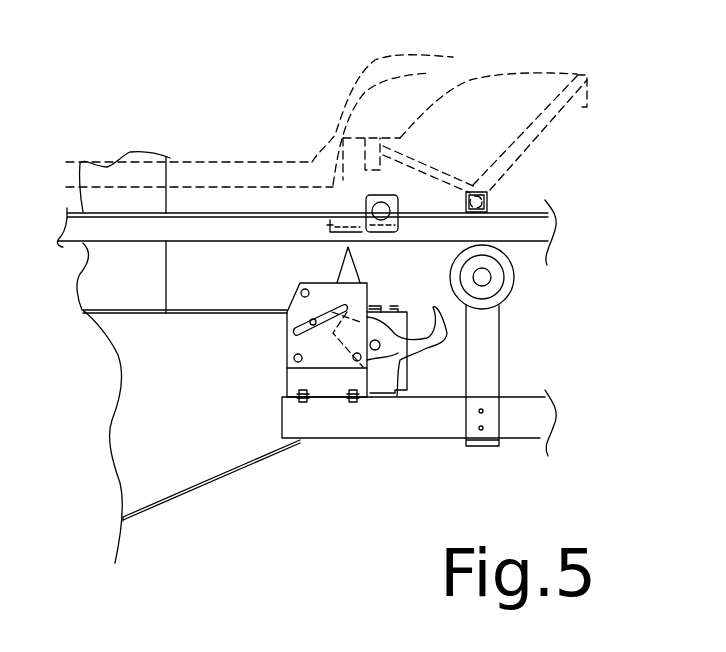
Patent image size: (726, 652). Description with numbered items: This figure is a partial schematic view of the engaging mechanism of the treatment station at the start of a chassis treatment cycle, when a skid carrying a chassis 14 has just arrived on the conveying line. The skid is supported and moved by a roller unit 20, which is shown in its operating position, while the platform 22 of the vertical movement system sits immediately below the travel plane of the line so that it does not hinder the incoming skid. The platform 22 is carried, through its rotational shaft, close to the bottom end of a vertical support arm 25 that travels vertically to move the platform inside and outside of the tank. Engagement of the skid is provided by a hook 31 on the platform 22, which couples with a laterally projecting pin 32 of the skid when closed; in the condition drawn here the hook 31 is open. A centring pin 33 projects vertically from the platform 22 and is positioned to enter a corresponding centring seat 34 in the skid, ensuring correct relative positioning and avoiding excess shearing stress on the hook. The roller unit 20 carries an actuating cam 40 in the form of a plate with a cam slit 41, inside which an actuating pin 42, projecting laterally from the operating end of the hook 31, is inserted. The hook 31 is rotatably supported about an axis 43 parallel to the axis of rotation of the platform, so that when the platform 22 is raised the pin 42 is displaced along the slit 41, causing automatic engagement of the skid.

The chassis 14 is at (460, 83).
The roller unit 20 is at (522, 372).
The platform 22 is at (138, 460).
The vertical support arm 25 is at (133, 155).
The hook 31 is at (446, 352).
The laterally projecting pin 32 is at (383, 204).
The centring pin 33 is at (345, 275).
The centring seat 34 is at (343, 218).
The actuating cam 40 is at (280, 339).
The cam slit 41 is at (344, 308).
The actuating pin 42 is at (310, 306).
The axis 43 is at (397, 397).